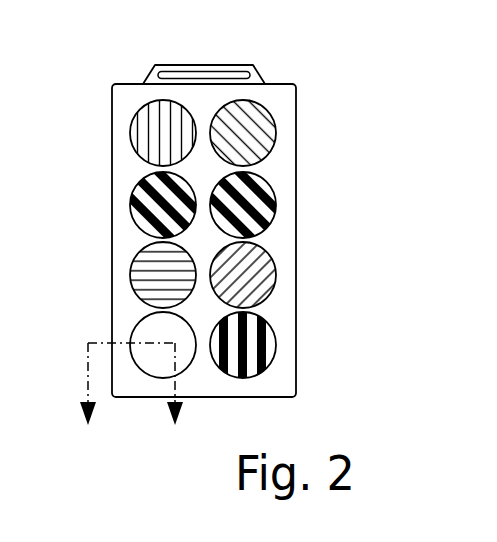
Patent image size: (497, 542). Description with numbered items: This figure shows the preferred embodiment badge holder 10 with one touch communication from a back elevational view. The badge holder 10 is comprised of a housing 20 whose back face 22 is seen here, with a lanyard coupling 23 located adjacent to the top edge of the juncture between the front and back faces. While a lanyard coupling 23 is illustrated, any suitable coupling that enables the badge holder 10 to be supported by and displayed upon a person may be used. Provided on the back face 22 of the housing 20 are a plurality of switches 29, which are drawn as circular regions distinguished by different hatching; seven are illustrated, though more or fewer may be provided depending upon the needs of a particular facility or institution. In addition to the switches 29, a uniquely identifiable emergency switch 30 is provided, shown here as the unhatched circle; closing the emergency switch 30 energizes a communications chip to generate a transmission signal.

The badge holder 10 is at (98, 46).
The housing 20 is at (278, 408).
The back face 22 is at (287, 103).
The lanyard coupling 23 is at (213, 72).
The switches 29 is at (150, 267).
The emergency switch 30 is at (147, 335).